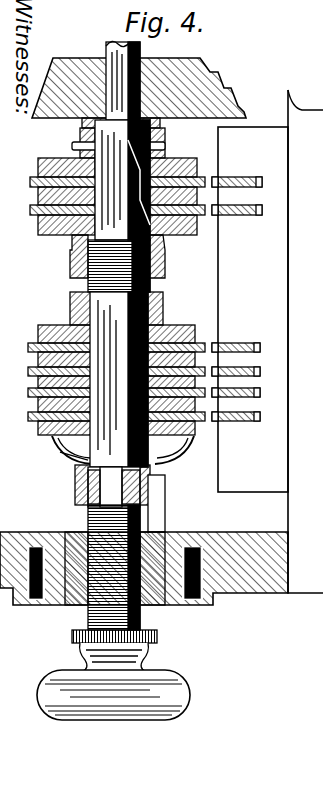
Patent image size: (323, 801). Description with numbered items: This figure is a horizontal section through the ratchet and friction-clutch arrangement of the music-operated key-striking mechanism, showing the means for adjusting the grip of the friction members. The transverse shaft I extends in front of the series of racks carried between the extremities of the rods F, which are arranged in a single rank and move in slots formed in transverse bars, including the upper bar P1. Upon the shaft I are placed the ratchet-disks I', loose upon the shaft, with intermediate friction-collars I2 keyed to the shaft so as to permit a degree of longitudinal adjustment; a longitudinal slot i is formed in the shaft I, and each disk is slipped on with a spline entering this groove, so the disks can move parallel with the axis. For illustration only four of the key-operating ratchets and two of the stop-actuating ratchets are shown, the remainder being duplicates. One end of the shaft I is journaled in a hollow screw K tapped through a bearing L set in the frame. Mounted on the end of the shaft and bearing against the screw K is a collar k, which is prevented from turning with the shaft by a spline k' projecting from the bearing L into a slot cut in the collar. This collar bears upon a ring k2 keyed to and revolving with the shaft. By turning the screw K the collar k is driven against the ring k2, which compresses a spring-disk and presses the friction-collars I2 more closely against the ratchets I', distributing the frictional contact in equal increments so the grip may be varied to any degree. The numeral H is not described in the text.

The longitudinal slot i is at (167, 147).
The upper bar P1 is at (253, 309).
The rods F is at (238, 350).
The transverse shaft I is at (98, 307).
The ratchet-disks I' is at (98, 380).
The friction-collars I2 is at (30, 371).
The hollow screw K is at (176, 440).
The ring k2 is at (76, 458).
The collar k is at (97, 485).
The spline k' is at (172, 503).
The bearing L is at (165, 598).
The spindle H is at (88, 615).